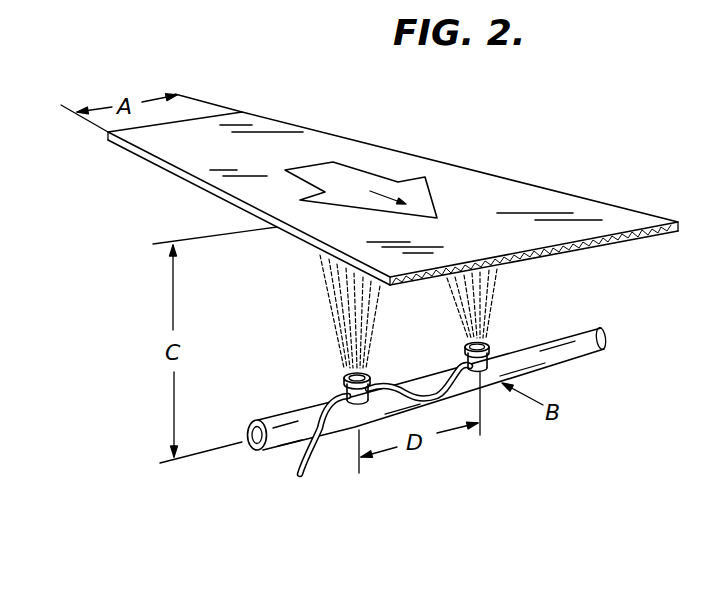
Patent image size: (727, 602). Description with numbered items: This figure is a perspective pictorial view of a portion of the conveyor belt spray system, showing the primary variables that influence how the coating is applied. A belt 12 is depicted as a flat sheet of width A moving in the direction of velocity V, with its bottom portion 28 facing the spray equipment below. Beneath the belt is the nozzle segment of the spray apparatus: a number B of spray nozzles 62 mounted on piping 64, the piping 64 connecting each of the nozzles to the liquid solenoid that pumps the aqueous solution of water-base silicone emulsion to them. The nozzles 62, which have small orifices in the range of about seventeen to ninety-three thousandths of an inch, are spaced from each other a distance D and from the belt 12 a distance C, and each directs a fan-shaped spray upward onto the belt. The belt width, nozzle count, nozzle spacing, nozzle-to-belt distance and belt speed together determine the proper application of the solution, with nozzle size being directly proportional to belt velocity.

The belt 12 is at (413, 152).
The bottom portion 28 is at (158, 168).
The nozzles 62 is at (344, 385).
The piping 64 is at (307, 469).